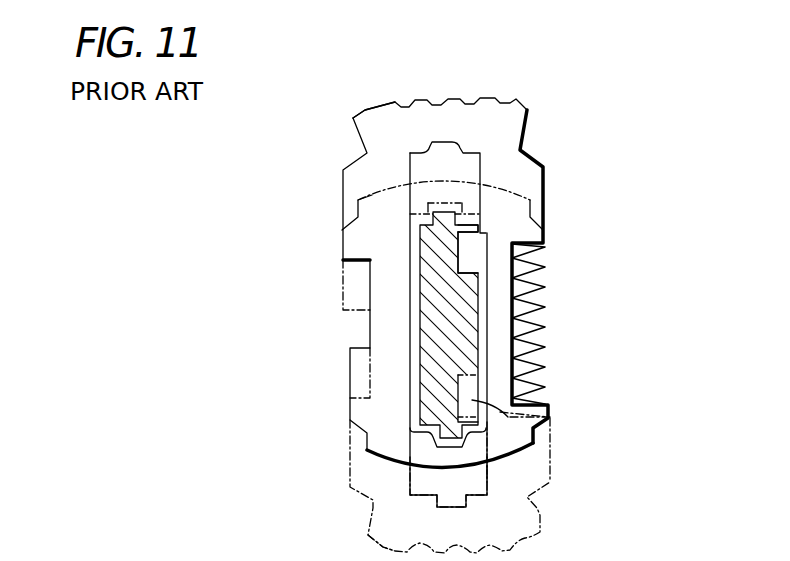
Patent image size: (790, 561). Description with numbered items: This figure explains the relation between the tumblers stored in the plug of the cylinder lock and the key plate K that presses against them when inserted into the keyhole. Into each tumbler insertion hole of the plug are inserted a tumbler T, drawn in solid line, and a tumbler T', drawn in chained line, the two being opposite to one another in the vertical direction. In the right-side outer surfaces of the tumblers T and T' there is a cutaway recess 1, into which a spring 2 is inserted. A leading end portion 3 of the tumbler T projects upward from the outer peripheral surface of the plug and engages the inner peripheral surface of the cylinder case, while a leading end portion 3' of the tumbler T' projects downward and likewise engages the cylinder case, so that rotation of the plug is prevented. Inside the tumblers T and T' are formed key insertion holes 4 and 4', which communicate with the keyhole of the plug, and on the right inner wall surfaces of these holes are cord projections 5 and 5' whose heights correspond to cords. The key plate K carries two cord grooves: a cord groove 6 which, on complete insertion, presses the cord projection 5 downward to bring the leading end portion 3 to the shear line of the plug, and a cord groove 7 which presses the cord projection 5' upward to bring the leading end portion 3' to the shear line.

The tumbler T is at (481, 282).
The leading end portion 3 is at (339, 102).
The key insertion hole 4 is at (513, 324).
The key plate K is at (416, 298).
The cord projection 5 is at (540, 244).
The cord groove 6 is at (460, 263).
The spring 2 is at (533, 327).
The cutaway recess 1 is at (530, 396).
The cord projection 5' is at (566, 435).
The cord groove 7 is at (472, 400).
The tumbler T' is at (477, 489).
The key insertion hole 4' is at (371, 475).
The leading end portion 3' is at (336, 529).